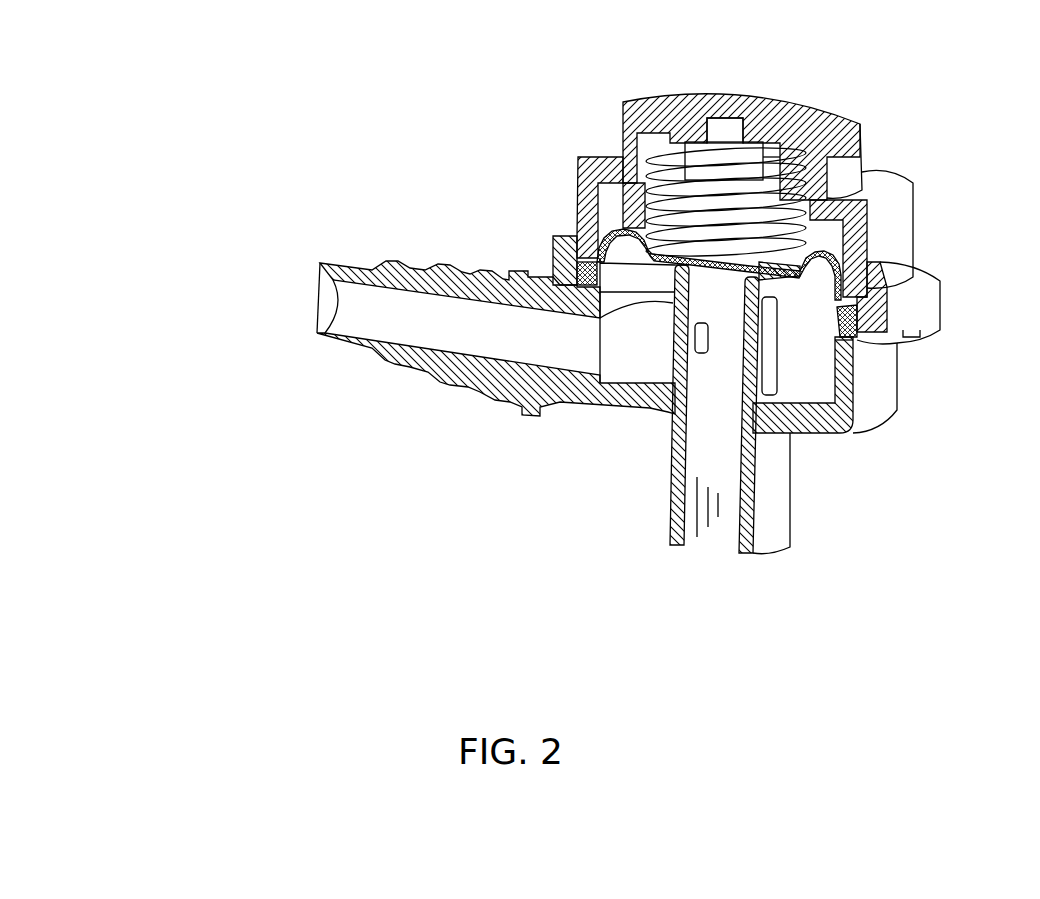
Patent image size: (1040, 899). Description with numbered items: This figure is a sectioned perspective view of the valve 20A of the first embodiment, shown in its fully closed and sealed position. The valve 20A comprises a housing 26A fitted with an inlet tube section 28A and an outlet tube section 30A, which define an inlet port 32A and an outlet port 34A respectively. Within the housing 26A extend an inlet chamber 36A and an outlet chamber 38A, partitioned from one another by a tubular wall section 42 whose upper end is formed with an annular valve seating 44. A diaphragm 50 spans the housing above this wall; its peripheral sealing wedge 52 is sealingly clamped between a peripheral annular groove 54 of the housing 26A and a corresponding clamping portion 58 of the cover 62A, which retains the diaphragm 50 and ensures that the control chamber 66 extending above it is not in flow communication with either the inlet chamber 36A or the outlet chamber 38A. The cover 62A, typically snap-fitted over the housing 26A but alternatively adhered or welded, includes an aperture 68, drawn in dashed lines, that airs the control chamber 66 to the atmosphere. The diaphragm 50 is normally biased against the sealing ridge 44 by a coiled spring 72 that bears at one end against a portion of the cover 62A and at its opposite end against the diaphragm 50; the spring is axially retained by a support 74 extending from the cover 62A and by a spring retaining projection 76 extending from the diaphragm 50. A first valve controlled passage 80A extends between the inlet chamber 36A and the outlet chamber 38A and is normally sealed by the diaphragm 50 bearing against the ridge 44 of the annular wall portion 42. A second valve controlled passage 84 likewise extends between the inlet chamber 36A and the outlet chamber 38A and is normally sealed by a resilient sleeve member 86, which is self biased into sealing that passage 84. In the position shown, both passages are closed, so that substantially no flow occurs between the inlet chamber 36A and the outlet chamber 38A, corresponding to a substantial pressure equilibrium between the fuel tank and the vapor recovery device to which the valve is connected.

The valve 20A is at (478, 143).
The housing 26A is at (873, 425).
The inlet tube section 28A is at (382, 270).
The outlet tube section 30A is at (742, 547).
The inlet port 32A is at (360, 310).
The outlet port 34A is at (716, 540).
The inlet chamber 36A is at (655, 338).
The outlet chamber 38A is at (722, 308).
The tubular wall section 42 is at (585, 270).
The annular valve seating 44 is at (610, 212).
The diaphragm 50 is at (867, 287).
The peripheral sealing wedge 52 is at (857, 312).
The peripheral annular groove 54 is at (877, 373).
The clamping portion 58 is at (867, 290).
The cover 62A is at (900, 237).
The control chamber 66 is at (603, 260).
The aperture 68 is at (730, 133).
The coiled spring 72 is at (731, 178).
The support 74 is at (770, 168).
The spring retaining projection 76 is at (658, 262).
The outer wall 80A is at (872, 420).
The second valve controlled passage 84 is at (703, 353).
The resilient sleeve member 86 is at (685, 293).